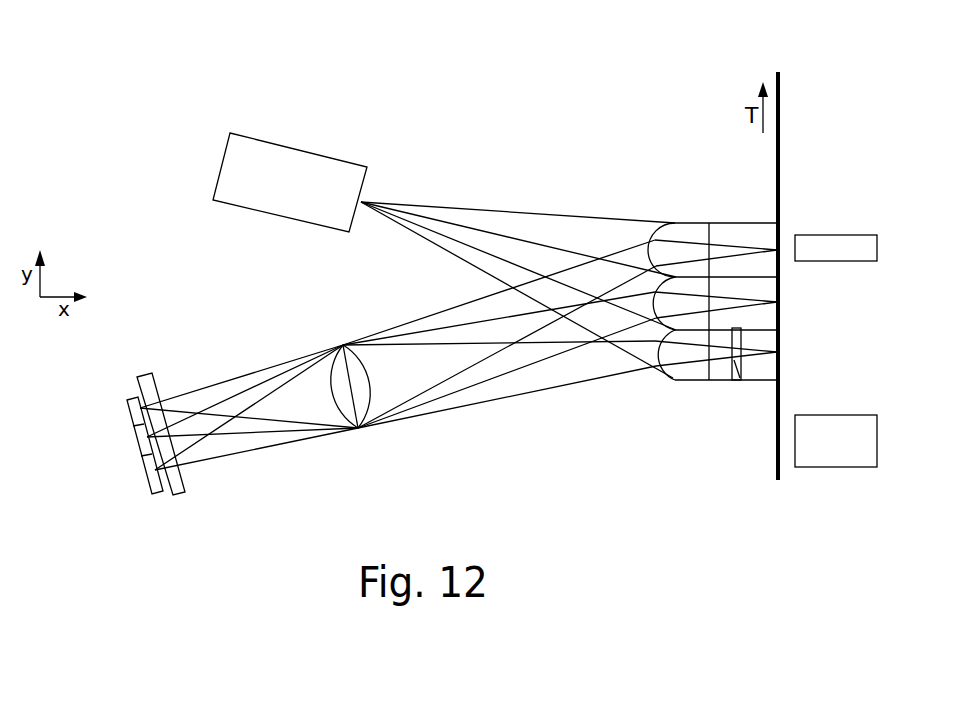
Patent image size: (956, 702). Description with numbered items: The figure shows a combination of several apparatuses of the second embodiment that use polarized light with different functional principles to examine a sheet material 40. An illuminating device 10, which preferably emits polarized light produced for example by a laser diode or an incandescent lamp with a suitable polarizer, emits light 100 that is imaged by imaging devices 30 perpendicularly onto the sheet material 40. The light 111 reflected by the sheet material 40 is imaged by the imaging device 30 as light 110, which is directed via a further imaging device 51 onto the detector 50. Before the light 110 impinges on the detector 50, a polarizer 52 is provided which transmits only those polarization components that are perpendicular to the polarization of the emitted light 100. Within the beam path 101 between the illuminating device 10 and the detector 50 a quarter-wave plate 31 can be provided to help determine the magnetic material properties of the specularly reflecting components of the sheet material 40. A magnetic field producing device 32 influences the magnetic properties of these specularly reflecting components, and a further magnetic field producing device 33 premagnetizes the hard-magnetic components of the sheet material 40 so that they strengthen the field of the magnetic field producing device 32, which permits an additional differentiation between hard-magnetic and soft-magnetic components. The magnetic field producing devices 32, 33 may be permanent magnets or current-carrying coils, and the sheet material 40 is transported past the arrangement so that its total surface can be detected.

The illuminating device 10 is at (68, 167).
The light emitted by illuminating device 100 is at (427, 195).
The light imaged onto detector 110 is at (420, 362).
The light reflected by sheet material 111 is at (672, 223).
The beam path 101 is at (738, 222).
The imaging device 30 is at (702, 293).
The quarter-wave plate 31 is at (738, 385).
The magnetic field producing device 32 is at (826, 248).
The further magnetic field producing device 33 is at (833, 455).
The sheet material 40 is at (779, 132).
The detector 50 is at (140, 447).
The imaging device 51 is at (344, 432).
The polarizer 52 is at (172, 493).